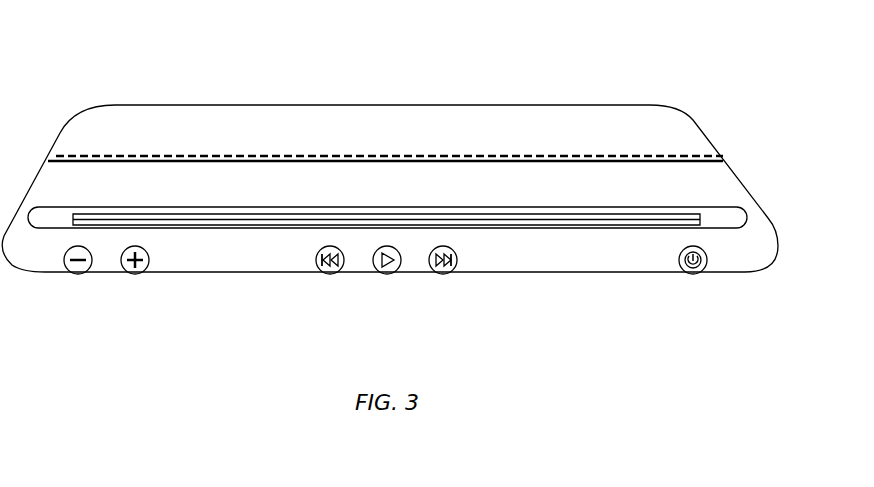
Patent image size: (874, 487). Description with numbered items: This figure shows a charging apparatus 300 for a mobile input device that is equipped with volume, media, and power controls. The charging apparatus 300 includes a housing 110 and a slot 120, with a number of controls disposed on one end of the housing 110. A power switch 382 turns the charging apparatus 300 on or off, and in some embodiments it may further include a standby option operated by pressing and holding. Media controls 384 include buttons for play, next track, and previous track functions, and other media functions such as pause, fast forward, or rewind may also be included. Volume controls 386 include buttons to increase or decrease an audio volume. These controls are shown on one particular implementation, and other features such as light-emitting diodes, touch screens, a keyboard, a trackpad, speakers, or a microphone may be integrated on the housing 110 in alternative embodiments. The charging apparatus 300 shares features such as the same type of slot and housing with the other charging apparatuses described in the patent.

The charging apparatus 300 is at (171, 54).
The housing 110 is at (717, 185).
The slot 120 is at (727, 223).
The power switch 382 is at (700, 272).
The media controls 384 is at (315, 275).
The volume controls 386 is at (58, 275).